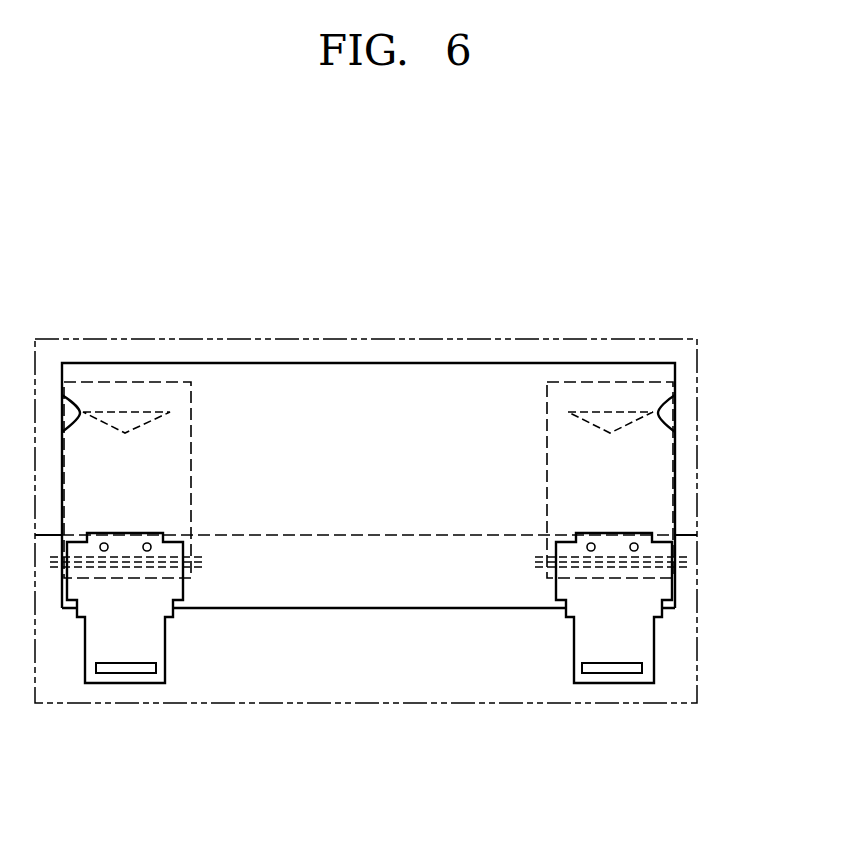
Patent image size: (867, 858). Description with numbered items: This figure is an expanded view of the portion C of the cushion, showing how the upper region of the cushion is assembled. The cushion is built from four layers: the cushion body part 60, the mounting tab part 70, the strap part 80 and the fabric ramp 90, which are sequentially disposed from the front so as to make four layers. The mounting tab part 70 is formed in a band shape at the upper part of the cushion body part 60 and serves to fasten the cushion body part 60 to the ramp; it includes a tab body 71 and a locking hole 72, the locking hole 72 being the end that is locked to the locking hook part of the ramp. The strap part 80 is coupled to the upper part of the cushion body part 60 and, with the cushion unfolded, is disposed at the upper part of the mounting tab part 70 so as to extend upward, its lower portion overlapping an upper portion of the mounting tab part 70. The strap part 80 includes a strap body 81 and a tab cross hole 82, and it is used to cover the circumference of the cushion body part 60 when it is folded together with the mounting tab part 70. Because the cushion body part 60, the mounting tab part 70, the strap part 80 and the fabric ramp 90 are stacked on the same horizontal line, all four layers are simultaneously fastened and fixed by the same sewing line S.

The cushion body part 60 is at (312, 672).
The mounting tab part 70 is at (369, 672).
The tab body 71 is at (585, 639).
The locking hole 72 is at (508, 766).
The strap part 80 is at (436, 480).
The strap body 81 is at (618, 487).
The tab cross hole 82 is at (618, 423).
The fabric ramp 90 is at (380, 392).
The portion C is at (590, 338).
The sewing line S is at (643, 570).